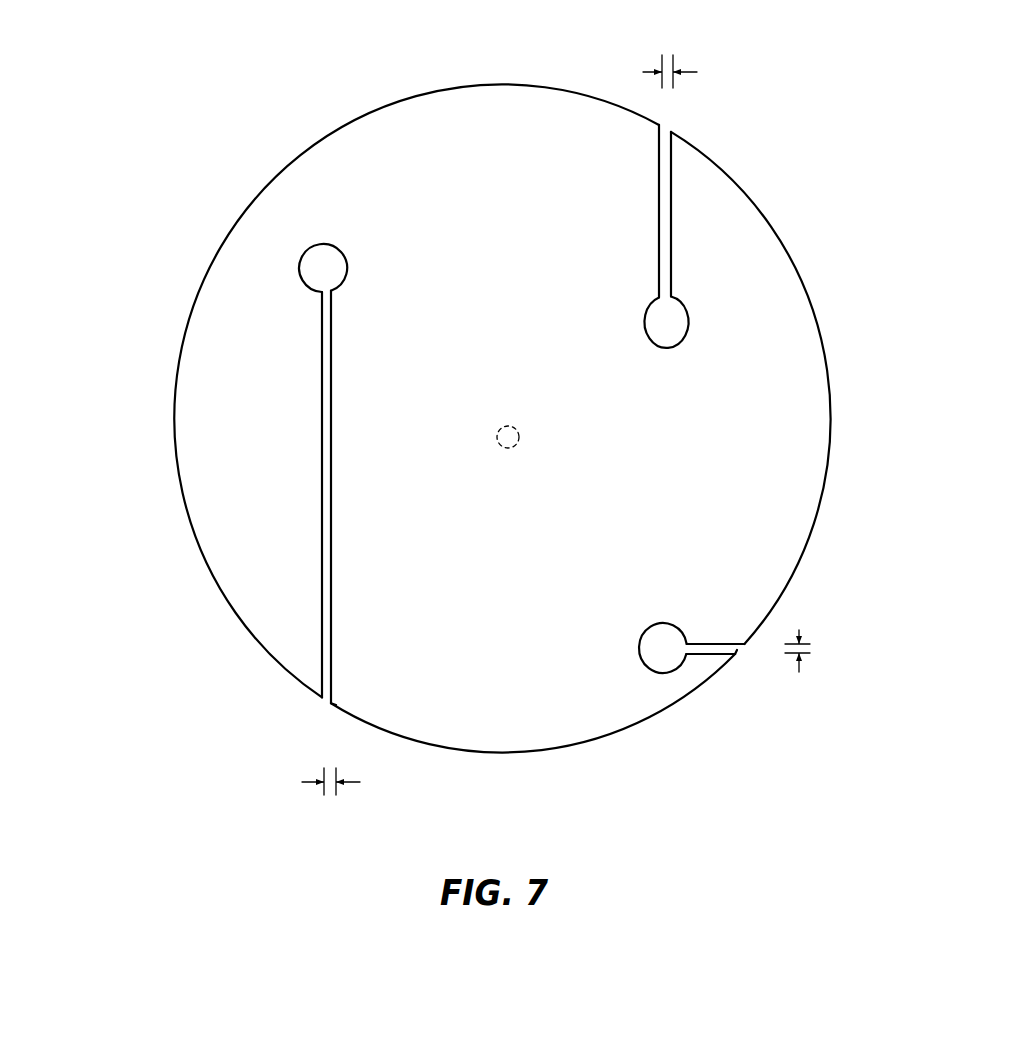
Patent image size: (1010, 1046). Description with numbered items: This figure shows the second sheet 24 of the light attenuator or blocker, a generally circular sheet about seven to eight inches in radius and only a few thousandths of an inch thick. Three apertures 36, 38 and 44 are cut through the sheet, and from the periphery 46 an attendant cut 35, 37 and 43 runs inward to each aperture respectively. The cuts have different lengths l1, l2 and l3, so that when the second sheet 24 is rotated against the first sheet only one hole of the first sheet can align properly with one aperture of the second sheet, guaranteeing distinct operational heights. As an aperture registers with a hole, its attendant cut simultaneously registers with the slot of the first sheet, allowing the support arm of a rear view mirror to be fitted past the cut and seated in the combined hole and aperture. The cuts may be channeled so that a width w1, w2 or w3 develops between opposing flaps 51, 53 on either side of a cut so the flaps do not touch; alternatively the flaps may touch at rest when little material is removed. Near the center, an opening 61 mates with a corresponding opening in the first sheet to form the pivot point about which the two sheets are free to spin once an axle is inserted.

The second sheet 24 is at (583, 389).
The periphery 46 is at (535, 83).
The cut 43 is at (335, 534).
The aperture 44 is at (347, 266).
The opposing flap 51 is at (323, 620).
The opposing flap 53 is at (335, 618).
The length of cut l1 is at (335, 498).
The width w1 is at (335, 793).
The cut 37 is at (697, 214).
The aperture 38 is at (683, 315).
The length of cut l2 is at (660, 236).
The width w2 is at (668, 53).
The cut 35 is at (732, 609).
The aperture 36 is at (667, 622).
The length of cut l3 is at (702, 645).
The width w3 is at (821, 649).
The opening 61 is at (518, 432).